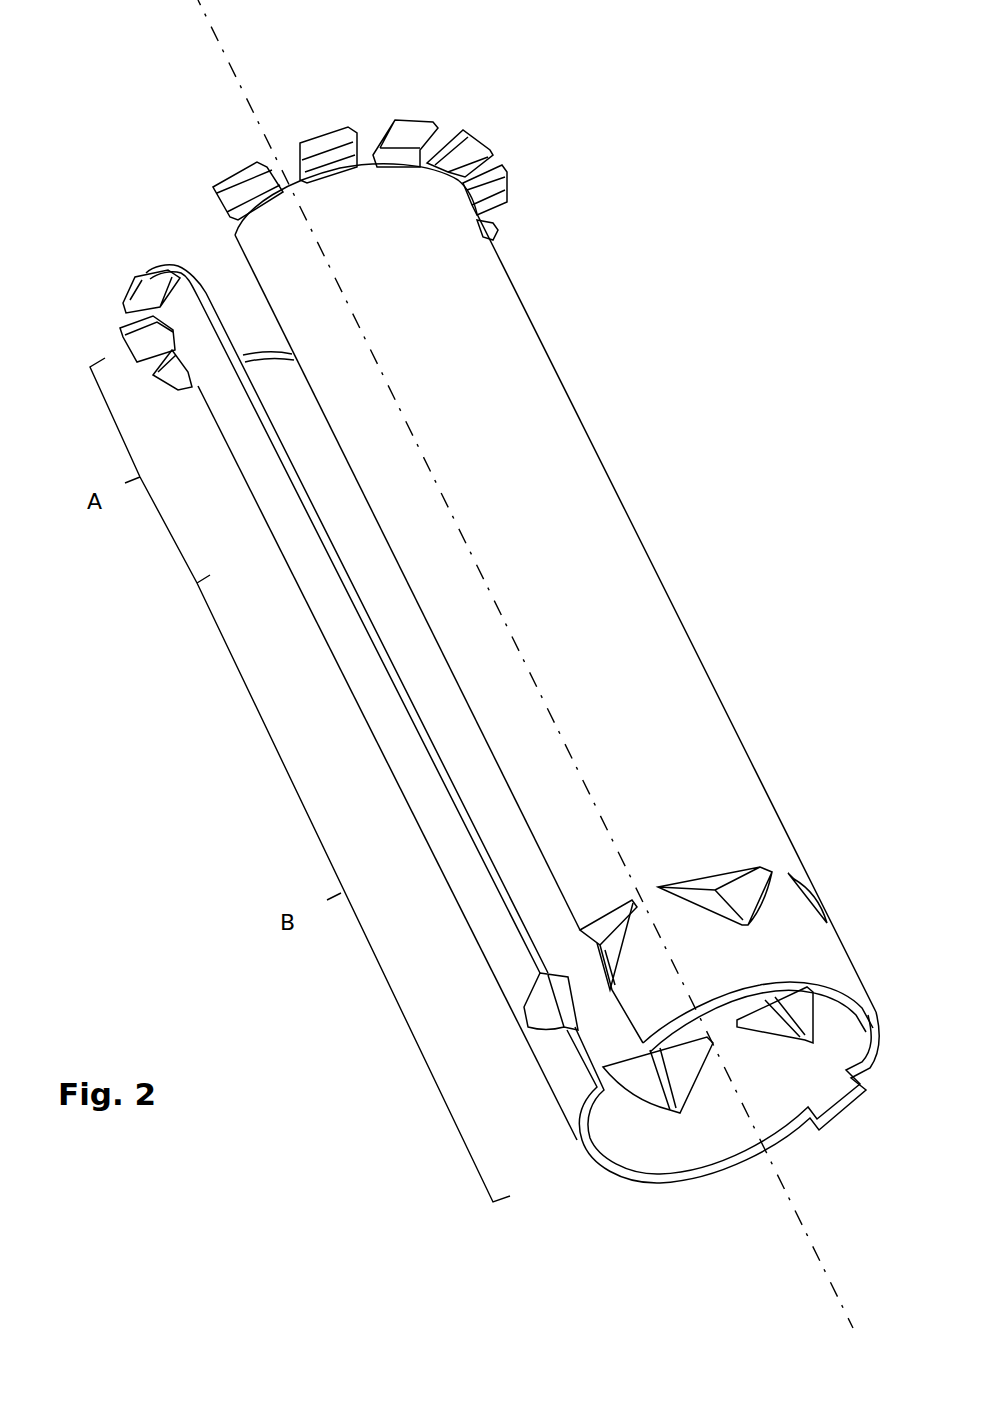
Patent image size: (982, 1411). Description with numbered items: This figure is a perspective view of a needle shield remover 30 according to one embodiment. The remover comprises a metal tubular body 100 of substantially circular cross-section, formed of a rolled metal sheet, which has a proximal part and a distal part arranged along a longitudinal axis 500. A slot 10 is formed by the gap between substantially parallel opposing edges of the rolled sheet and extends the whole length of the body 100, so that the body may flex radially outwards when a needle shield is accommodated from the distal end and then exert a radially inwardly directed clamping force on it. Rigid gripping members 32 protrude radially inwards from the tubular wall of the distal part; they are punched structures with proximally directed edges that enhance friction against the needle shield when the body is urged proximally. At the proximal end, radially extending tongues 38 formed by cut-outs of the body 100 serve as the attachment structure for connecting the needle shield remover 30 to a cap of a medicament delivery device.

The longitudinal axis 500 is at (185, 0).
The radially extending tongues 38 is at (140, 277).
The needle shield remover 30 is at (650, 495).
The metal tubular body 100 is at (590, 623).
The slot 10 is at (507, 833).
The rigid gripping members 32 is at (727, 907).